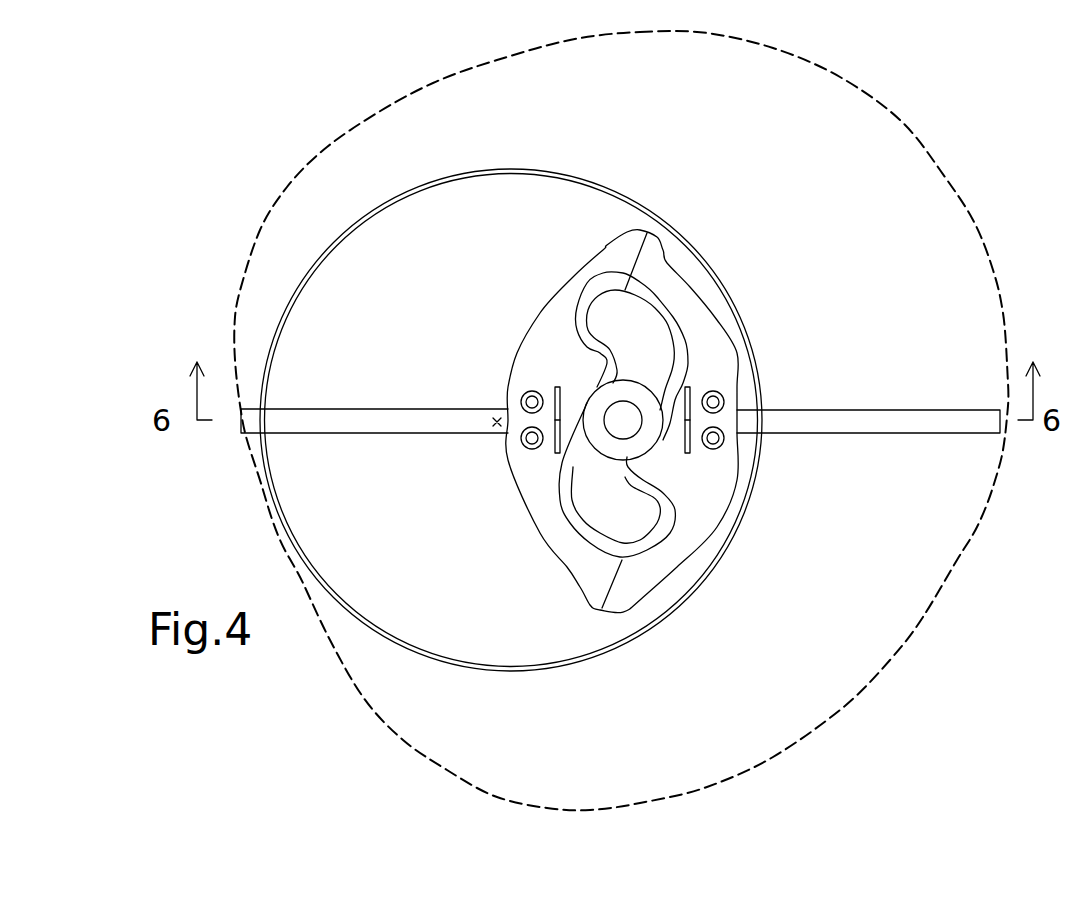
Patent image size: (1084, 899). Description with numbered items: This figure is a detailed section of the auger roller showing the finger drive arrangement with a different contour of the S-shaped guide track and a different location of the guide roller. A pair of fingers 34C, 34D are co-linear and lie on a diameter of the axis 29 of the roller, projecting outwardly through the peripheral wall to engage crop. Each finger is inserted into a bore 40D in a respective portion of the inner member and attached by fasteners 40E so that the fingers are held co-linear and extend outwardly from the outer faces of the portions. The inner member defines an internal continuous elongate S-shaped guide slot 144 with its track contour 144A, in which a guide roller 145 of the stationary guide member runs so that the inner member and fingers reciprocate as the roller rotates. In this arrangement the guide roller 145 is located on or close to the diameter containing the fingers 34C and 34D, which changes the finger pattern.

The axis 29 is at (492, 421).
The finger 34C is at (403, 417).
The finger 34D is at (957, 420).
The bore 40D is at (739, 436).
The fastener 40E is at (735, 396).
The guide slot 144 is at (577, 525).
The guide slot contour 144A is at (672, 398).
The guide roller 145 is at (642, 445).